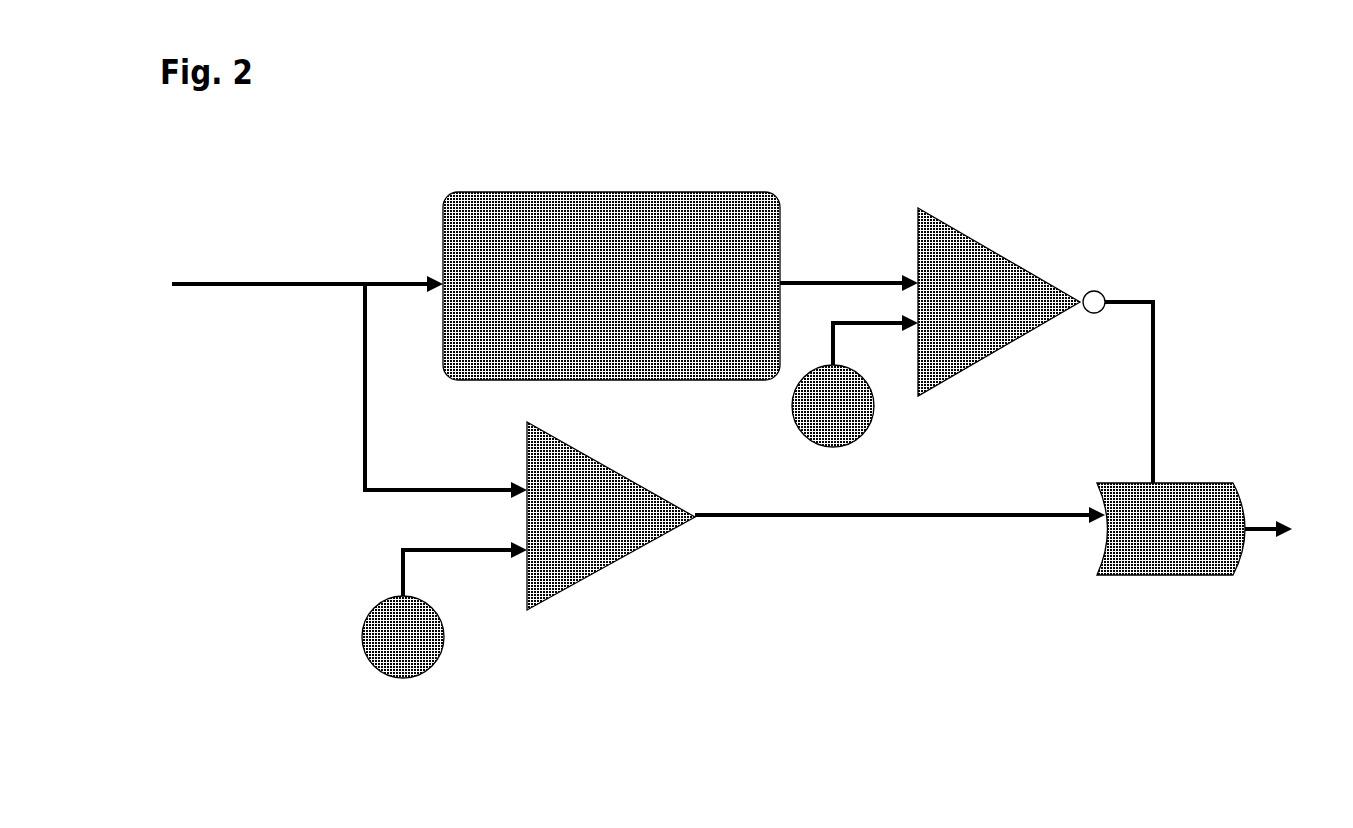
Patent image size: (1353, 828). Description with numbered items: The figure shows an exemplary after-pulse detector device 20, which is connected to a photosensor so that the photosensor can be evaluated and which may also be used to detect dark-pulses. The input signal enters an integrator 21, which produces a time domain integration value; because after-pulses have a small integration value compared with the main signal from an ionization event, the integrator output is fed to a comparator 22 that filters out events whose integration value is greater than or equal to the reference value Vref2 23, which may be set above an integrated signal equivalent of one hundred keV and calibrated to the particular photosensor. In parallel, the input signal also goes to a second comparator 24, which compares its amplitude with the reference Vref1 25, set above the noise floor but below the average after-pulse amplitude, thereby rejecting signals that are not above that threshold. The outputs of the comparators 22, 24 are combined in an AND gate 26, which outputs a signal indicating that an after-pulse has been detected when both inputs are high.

The after-pulse detector device 20 is at (863, 133).
The integrator 21 is at (603, 193).
The comparator 22 is at (1015, 258).
The Vref2 23 is at (875, 427).
The comparator 24 is at (611, 577).
The Vref1 25 is at (428, 666).
The AND gate 26 is at (1178, 575).